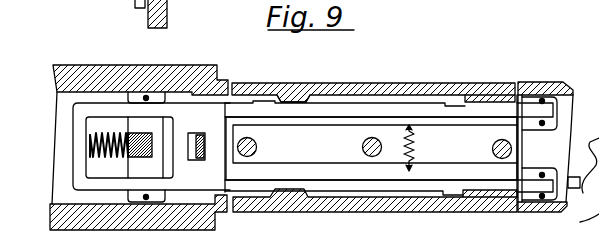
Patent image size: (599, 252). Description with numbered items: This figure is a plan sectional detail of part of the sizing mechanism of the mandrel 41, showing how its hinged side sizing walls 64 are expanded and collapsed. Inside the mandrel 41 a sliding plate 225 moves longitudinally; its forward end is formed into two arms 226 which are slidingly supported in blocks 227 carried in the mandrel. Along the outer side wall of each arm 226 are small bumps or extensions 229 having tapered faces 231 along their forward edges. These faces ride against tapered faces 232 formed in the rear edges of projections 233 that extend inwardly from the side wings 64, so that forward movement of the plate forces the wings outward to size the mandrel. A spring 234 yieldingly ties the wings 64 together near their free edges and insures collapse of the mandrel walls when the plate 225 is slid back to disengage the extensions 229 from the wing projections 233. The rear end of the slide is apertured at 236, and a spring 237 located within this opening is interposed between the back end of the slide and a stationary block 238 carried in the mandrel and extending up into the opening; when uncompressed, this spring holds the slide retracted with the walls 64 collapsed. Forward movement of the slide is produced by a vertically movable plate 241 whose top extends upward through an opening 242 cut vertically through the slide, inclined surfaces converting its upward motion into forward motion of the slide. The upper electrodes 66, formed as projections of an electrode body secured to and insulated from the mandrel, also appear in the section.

The mandrel 41 is at (128, 73).
The hinged side sizing walls 64 is at (392, 93).
The upper electrodes 66 is at (258, 147).
The sliding plate 225 is at (182, 114).
The arms 226 is at (407, 115).
The blocks 227 is at (556, 83).
The bumps or extensions 229 is at (467, 96).
The tapered faces 231 is at (463, 117).
The tapered faces 232 is at (289, 94).
The projections 233 is at (320, 93).
The spring 234 is at (416, 164).
The aperture 236 is at (93, 114).
The spring 237 is at (109, 147).
The stationary block 238 is at (142, 154).
The vertically movable plate 241 is at (194, 160).
The opening 242 is at (193, 131).